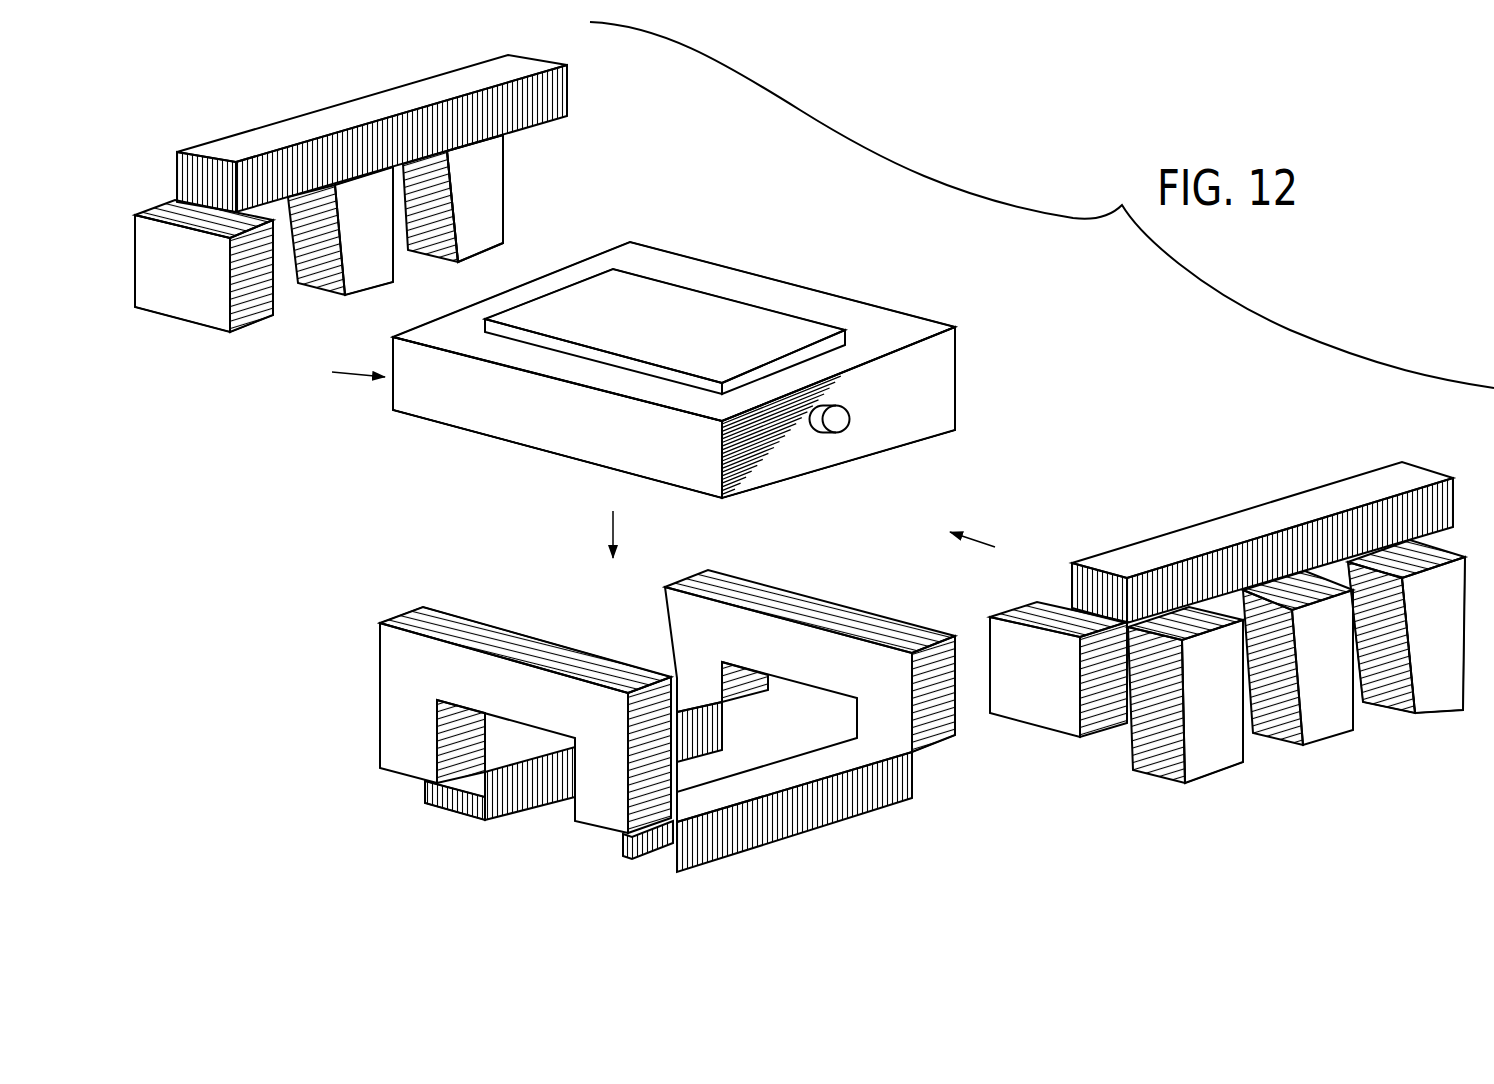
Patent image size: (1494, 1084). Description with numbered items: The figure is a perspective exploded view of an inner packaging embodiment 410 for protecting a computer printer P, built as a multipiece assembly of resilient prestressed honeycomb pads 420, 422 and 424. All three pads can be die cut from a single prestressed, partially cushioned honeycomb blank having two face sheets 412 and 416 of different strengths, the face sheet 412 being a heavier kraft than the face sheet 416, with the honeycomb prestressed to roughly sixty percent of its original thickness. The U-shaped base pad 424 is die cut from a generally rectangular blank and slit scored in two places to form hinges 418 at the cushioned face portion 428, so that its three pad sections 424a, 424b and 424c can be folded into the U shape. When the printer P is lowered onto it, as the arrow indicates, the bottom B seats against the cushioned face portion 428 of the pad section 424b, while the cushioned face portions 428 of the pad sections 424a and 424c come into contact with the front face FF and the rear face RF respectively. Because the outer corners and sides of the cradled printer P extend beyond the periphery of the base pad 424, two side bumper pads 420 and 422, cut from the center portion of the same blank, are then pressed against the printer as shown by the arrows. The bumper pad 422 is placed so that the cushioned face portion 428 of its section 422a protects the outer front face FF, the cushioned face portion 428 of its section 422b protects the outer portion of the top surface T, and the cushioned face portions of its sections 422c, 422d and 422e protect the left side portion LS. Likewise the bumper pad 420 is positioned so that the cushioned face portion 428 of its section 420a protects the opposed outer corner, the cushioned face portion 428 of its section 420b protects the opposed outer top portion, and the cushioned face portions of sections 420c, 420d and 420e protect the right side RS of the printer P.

The inner packaging embodiment 410 is at (1103, 448).
The face sheet 412 is at (497, 67).
The face sheet 416 is at (367, 197).
The hinges 418 is at (673, 830).
The side bumper pad 420 is at (1228, 615).
The bumper pad section 420a is at (988, 637).
The bumper pad section 420b is at (1100, 560).
The bumper pad section 420c is at (1158, 782).
The bumper pad section 420d is at (1288, 745).
The bumper pad section 420e is at (1405, 717).
The side bumper pad 422 is at (395, 217).
The bumper pad section 422a is at (255, 323).
The bumper pad section 422b is at (547, 125).
The bumper pad section 422c is at (287, 288).
The bumper pad section 422d is at (388, 285).
The bumper pad section 422e is at (503, 223).
The U-shaped base pad 424 is at (702, 709).
The pad section 424a is at (517, 631).
The pad section 424b is at (718, 795).
The pad section 424c is at (897, 697).
The cushioned face portion 428 is at (553, 110).
The printer P is at (701, 354).
The left side portion LS is at (611, 245).
The top surface T is at (684, 272).
The rear face RF is at (959, 377).
The right side RS is at (906, 428).
The bottom B is at (432, 427).
The front face FF is at (572, 435).